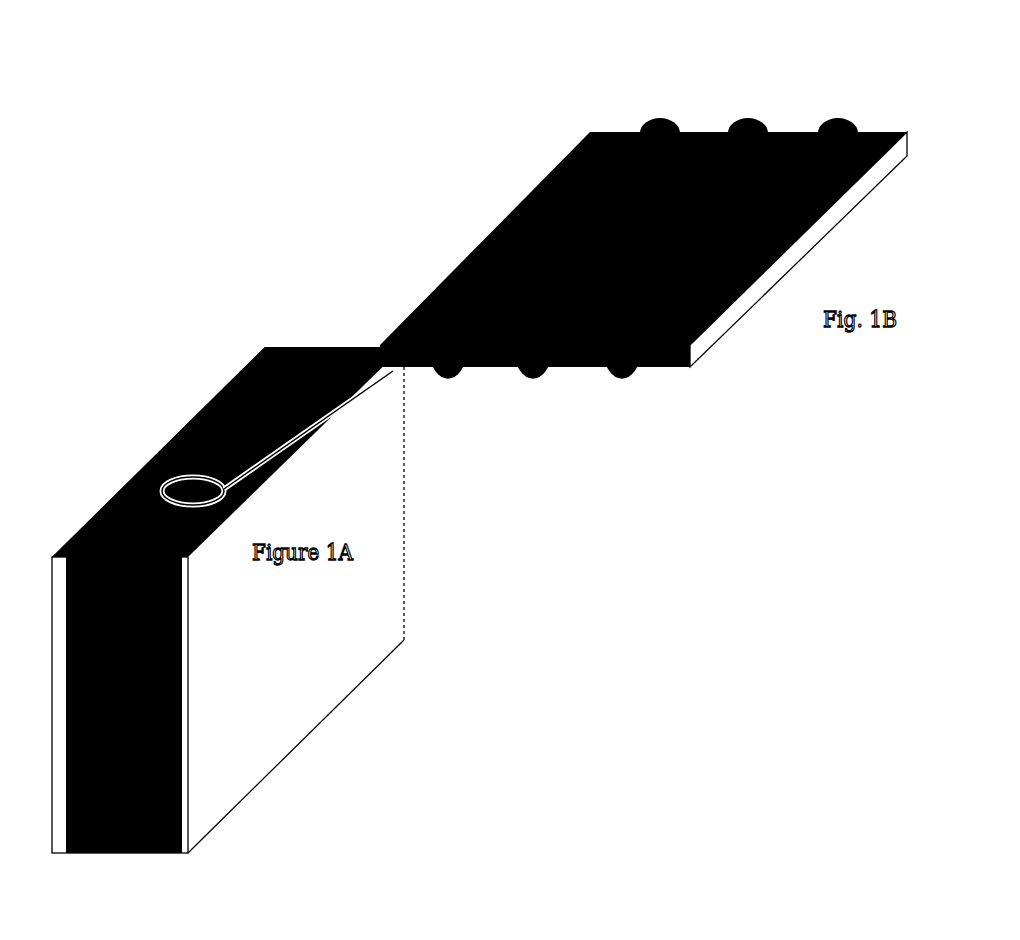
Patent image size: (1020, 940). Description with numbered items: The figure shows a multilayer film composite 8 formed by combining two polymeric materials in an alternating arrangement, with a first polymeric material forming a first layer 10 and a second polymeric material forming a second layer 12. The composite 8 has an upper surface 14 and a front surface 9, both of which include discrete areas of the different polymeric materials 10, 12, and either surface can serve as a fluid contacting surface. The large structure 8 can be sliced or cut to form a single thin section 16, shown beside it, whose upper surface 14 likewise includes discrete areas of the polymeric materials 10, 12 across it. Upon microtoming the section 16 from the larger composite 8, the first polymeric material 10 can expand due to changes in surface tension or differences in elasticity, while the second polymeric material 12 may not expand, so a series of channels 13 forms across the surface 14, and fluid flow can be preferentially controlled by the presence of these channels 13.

In FIG. 1A, the composite 8 is at (450, 611).
In FIG. 1A, the surface 9 is at (116, 685).
In FIG. 1A, the first layer 10 is at (131, 494).
In FIG. 1B, the first layer 10 is at (434, 383).
In FIG. 1A, the second layer 12 is at (237, 384).
In FIG. 1B, the second layer 12 is at (569, 368).
In FIG. 1B, the channels 13 is at (735, 117).
In FIG. 1A, the surface 14 is at (321, 399).
In FIG. 1B, the surface 14 is at (668, 225).
In FIG. 1B, the section 16 is at (476, 182).